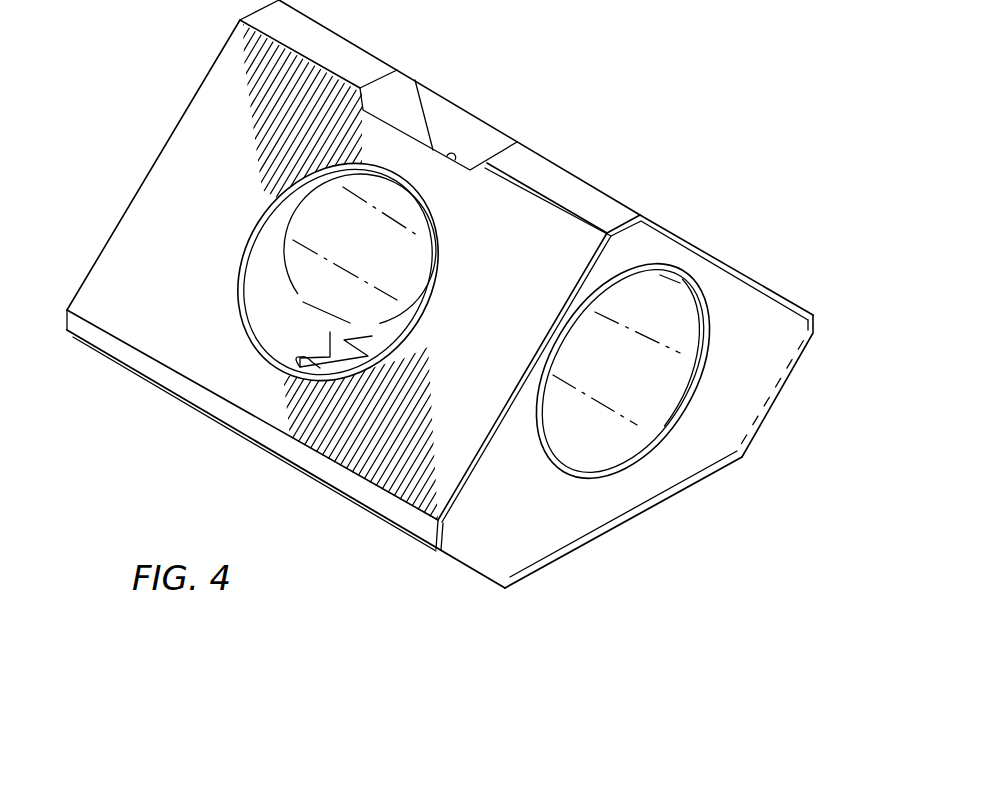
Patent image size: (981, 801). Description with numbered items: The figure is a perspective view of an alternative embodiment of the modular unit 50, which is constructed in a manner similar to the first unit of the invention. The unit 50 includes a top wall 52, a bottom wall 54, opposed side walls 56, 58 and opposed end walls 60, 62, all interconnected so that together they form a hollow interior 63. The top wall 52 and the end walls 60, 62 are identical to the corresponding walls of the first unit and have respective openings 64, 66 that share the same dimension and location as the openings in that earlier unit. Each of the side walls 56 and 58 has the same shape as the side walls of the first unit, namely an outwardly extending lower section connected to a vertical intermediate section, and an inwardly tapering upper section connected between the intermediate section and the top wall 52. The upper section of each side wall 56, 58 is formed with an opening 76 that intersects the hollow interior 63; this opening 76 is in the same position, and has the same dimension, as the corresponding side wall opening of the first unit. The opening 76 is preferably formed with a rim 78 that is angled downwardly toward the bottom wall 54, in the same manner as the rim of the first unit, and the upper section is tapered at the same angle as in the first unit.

The modular unit 50 is at (689, 112).
The top wall 52 is at (562, 185).
The bottom wall 54 is at (566, 580).
The side wall 56 is at (118, 392).
The side wall 58 is at (739, 199).
The end wall 60 is at (193, 98).
The end wall 62 is at (750, 418).
The hollow interior 63 is at (654, 382).
The opening 64 is at (477, 132).
The opening 66 is at (647, 443).
The opening 76 is at (300, 267).
The rim 78 is at (277, 347).